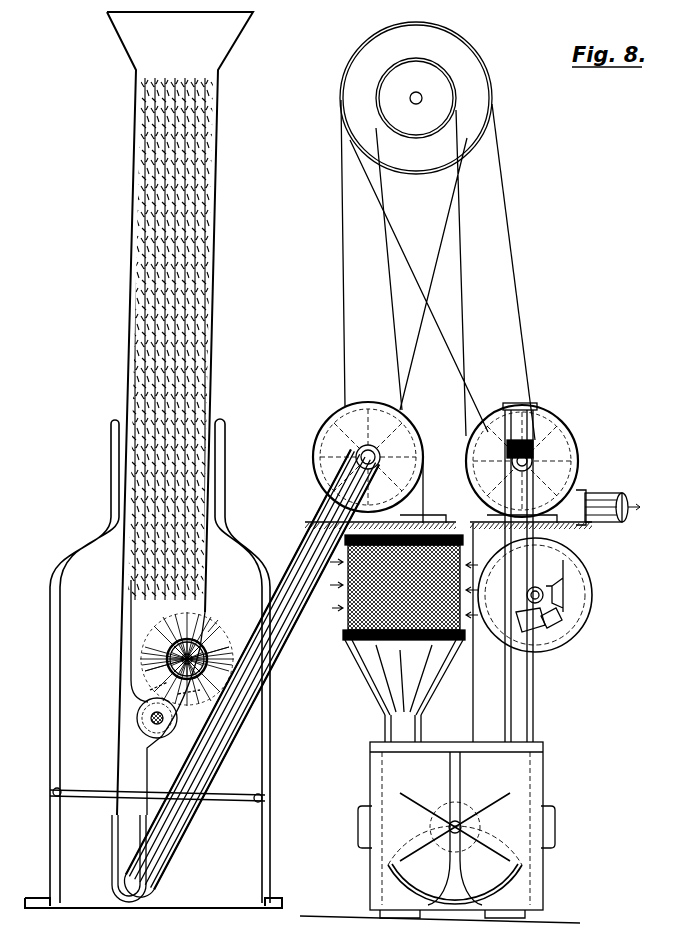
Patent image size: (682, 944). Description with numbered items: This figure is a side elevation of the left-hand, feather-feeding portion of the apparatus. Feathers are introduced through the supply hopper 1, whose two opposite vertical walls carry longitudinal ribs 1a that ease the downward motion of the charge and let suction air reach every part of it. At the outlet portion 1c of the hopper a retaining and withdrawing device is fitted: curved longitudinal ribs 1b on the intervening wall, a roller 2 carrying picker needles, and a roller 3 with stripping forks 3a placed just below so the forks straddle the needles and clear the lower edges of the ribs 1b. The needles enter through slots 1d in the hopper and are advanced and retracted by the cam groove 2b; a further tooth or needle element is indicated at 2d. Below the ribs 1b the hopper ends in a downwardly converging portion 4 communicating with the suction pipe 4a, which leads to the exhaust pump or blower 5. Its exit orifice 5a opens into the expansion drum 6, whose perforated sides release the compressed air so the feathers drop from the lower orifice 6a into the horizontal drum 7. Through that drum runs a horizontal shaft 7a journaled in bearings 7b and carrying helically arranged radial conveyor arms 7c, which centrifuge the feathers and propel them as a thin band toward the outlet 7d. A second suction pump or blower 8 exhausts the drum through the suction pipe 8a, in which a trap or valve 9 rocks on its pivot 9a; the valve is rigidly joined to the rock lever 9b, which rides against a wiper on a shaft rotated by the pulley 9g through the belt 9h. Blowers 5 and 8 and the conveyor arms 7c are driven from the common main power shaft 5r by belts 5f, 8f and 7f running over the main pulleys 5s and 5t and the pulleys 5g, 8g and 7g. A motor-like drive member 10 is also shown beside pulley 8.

The supply hopper 1 is at (213, 287).
The longitudinal ribs 1a is at (197, 193).
The longitudinal ribs 1b is at (117, 641).
The outlet portion of the hopper 1c is at (160, 688).
The slots 1d is at (185, 700).
The picker needle roller 2 is at (146, 640).
The cam groove 2b is at (208, 668).
The wheel tooth 2d is at (208, 632).
The stripping fork roller 3 is at (150, 716).
The stripping forks 3a is at (159, 731).
The downwardly converging portion 4 is at (111, 842).
The suction pipe 4a is at (281, 641).
The exhaust pump or blower 5 is at (324, 432).
The exit orifice 5a is at (426, 528).
The belt 5f is at (341, 290).
The pulley 5g is at (381, 459).
The main power shaft 5r is at (415, 97).
The main pulley or sprocket wheel 5s is at (480, 80).
The main pulley or sprocket wheel 5t is at (445, 106).
The expansion drum 6 is at (352, 603).
The lower orifice 6a is at (385, 726).
The horizontal drum 7 is at (410, 780).
The horizontal shaft 7a is at (372, 826).
The bearings 7b is at (462, 886).
The radial conveyor arms 7c is at (510, 816).
The outlet of the drum 7d is at (542, 744).
The belt 7f is at (461, 298).
The pulley 7g is at (402, 852).
The second suction pump or blower 8 is at (580, 457).
The suction pipe 8a is at (535, 714).
The belt 8f is at (526, 300).
The pulley 8g is at (548, 456).
The trap or valve 9 is at (500, 640).
The pivot or journal 9a is at (538, 640).
The rock lever 9b is at (555, 626).
The pulley 9g is at (580, 572).
The belt 9h is at (572, 553).
The motor 10 is at (616, 498).